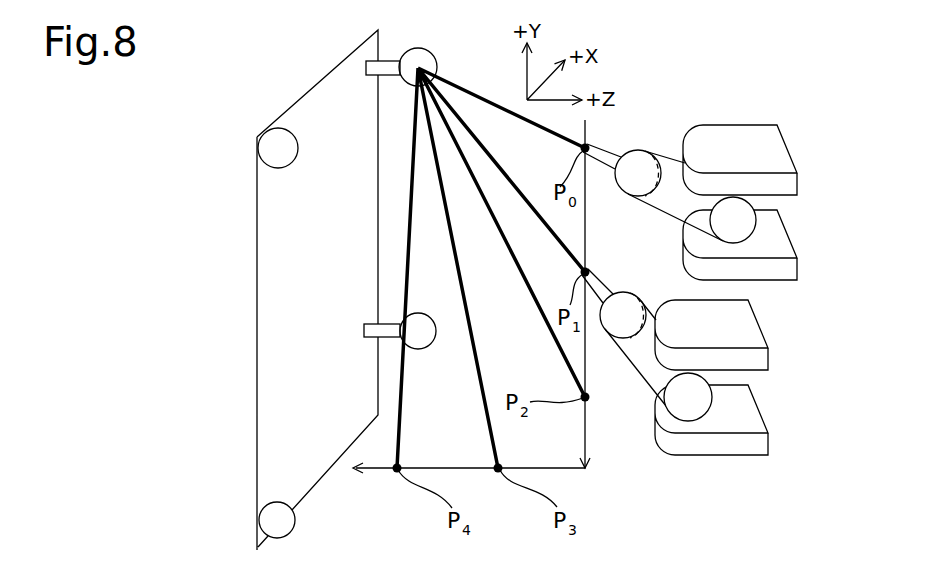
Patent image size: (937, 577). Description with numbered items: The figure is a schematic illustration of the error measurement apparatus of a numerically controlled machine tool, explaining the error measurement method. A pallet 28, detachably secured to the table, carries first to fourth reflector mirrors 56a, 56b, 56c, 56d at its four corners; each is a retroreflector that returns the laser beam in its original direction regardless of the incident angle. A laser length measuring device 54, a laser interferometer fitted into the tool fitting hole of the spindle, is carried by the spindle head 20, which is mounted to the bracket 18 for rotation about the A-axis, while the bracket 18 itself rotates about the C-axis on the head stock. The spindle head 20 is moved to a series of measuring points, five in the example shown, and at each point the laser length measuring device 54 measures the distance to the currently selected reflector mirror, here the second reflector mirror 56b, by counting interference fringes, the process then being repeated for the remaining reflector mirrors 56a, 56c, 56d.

The bracket 18 is at (750, 138).
The spindle head 20 is at (660, 210).
The pallet 28 is at (327, 75).
The laser length measuring device 54 is at (605, 155).
The first reflector mirror 56a is at (270, 162).
The second reflector mirror 56b is at (420, 52).
The third reflector mirror 56c is at (427, 335).
The fourth reflector mirror 56d is at (283, 525).